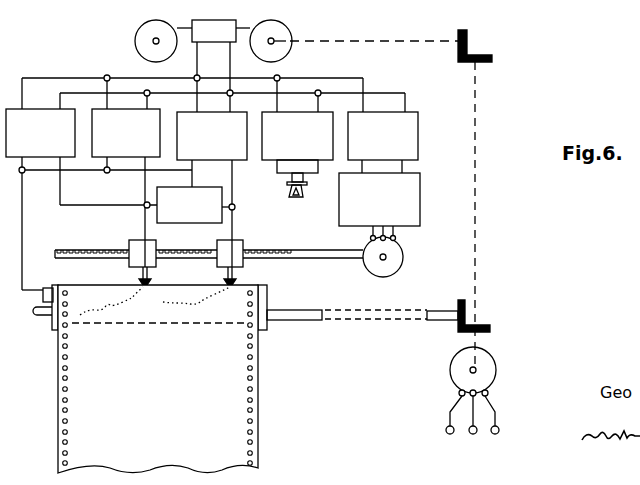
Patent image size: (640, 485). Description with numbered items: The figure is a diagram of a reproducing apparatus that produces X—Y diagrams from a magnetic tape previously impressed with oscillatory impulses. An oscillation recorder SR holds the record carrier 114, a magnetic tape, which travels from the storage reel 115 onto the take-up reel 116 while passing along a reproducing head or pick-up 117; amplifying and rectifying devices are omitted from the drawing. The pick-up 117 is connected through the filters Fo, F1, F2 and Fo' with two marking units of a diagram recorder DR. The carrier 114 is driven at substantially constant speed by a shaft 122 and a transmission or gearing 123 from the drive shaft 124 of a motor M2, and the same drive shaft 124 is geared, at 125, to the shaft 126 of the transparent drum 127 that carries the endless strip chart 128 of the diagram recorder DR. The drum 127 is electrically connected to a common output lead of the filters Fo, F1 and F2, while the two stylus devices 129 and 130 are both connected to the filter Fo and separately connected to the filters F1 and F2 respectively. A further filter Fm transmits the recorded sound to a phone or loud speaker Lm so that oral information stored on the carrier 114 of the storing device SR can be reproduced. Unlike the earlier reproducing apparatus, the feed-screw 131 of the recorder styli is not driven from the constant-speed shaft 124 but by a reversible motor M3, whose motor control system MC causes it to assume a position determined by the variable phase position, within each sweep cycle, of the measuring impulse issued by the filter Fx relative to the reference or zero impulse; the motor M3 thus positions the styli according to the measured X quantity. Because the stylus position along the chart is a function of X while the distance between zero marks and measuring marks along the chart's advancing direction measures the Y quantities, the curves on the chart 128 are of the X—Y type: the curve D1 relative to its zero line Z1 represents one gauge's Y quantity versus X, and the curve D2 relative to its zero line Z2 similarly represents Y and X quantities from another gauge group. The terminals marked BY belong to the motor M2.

The oscillation recorder SR is at (124, 30).
The record carrier 114 is at (248, 29).
The storage reel 115 is at (146, 47).
The take-up reel 116 is at (280, 56).
The reproducing head 117 is at (210, 29).
The shaft 122 is at (366, 31).
The transmission or gearing 123 is at (486, 43).
The drive shaft 124 is at (476, 222).
The gearing 125 is at (479, 325).
The drum shaft 126 is at (309, 322).
The transparent drum 127 is at (267, 294).
The endless strip chart 128 is at (253, 367).
The stylus device 129 is at (150, 247).
The stylus device 130 is at (238, 246).
The feed-screw 131 is at (107, 248).
The filter Fo is at (40, 126).
The filter F1 is at (137, 111).
The filter F2 is at (225, 113).
The filter Fm is at (311, 113).
The filter Fx is at (395, 113).
The filter Fo' is at (189, 198).
The phone or loud speaker Lm is at (290, 192).
The motor control system MC is at (413, 214).
The reversible motor M3 is at (400, 258).
The motor M2 is at (488, 366).
The diagram recorder DR is at (42, 347).
The curve D1 is at (113, 302).
The curve D2 is at (193, 305).
The zero line Z1 is at (83, 325).
The zero line Z2 is at (183, 326).
The motor terminals BY is at (526, 421).